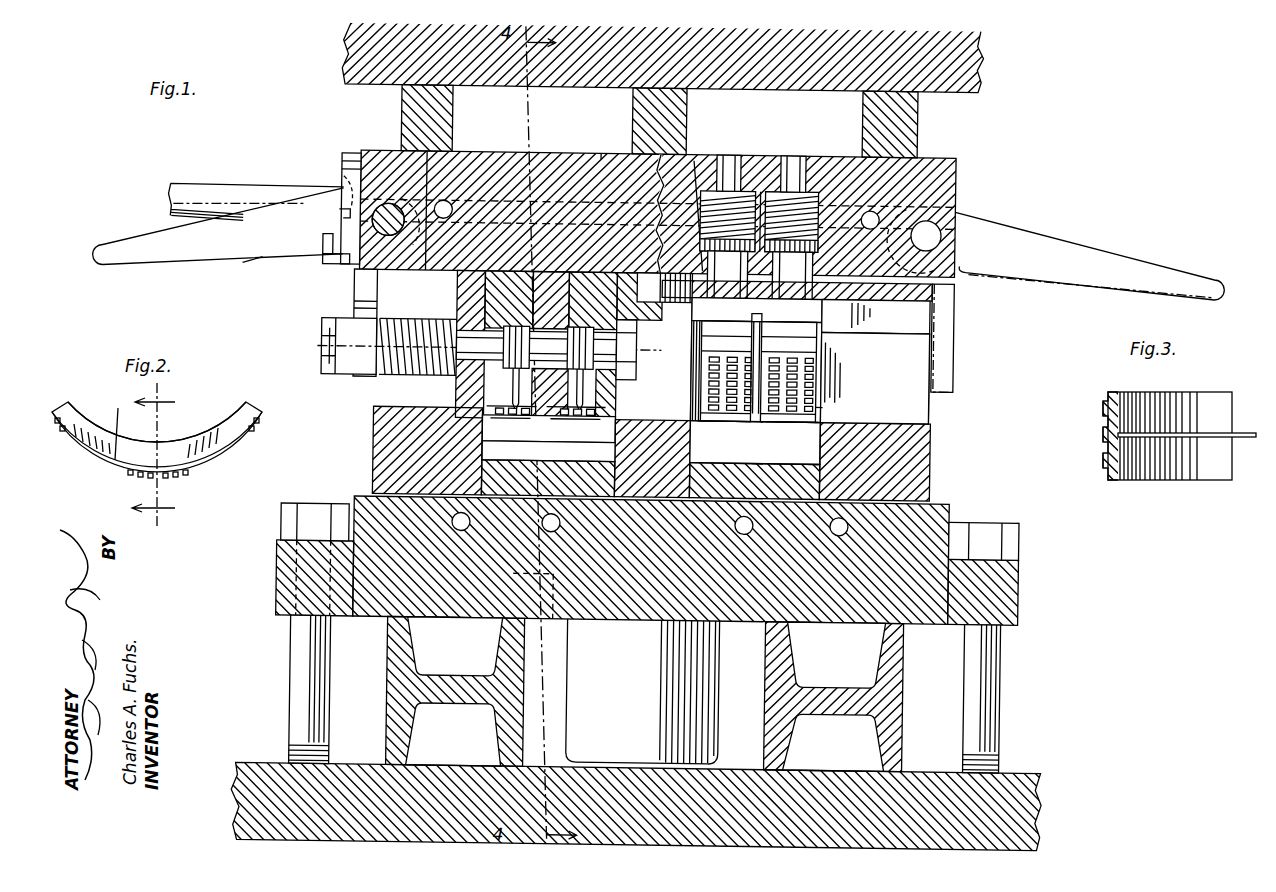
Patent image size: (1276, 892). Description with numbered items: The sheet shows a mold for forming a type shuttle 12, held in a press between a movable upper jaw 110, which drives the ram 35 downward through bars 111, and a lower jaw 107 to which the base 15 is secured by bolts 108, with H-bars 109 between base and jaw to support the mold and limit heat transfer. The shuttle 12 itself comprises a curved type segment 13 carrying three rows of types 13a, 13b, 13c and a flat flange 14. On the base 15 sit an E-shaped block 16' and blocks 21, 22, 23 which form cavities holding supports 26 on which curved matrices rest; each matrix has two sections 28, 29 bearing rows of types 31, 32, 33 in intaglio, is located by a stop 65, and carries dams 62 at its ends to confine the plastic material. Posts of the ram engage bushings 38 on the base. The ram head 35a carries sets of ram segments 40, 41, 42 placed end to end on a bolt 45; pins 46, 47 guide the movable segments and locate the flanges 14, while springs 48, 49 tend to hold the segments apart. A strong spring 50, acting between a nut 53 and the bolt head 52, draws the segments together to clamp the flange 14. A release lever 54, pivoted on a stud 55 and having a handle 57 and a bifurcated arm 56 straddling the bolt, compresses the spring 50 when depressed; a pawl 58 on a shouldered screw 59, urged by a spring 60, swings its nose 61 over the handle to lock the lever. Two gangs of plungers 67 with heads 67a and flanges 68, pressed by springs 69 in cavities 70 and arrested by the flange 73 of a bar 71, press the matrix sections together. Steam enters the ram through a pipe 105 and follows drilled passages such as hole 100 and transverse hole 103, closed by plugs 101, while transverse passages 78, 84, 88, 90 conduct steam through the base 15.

In FIG. 1, the upper jaw 110 is at (974, 88).
In FIG. 1, the bars 111 is at (404, 110).
In FIG. 1, the ram 35 is at (330, 134).
In FIG. 1, the ram head 35a is at (696, 160).
In FIG. 1, the hole 100 is at (597, 165).
In FIG. 1, the stud 55 is at (384, 207).
In FIG. 1, the transverse hole 103 is at (442, 208).
In FIG. 1, the plugs 101 is at (864, 212).
In FIG. 1, the plungers 67 is at (727, 160).
In FIG. 1, the spring 69 is at (770, 190).
In FIG. 1, the pawl 58 is at (346, 178).
In FIG. 1, the nose 61 is at (340, 183).
In FIG. 1, the spring 60 is at (336, 218).
In FIG. 1, the shouldered screw 59 is at (322, 247).
In FIG. 1, the pipe 105 is at (218, 200).
In FIG. 1, the handle 57 is at (140, 250).
In FIG. 1, the lever 54 is at (242, 274).
In FIG. 1, the arm 56 is at (358, 286).
In FIG. 1, the bolt 45 is at (320, 350).
In FIG. 1, the nut 53 is at (332, 368).
In FIG. 1, the spring 50 is at (418, 352).
In FIG. 1, the ram segment 40 is at (490, 278).
In FIG. 1, the intermediate segment 41 is at (545, 278).
In FIG. 1, the end segment 42 is at (598, 278).
In FIG. 1, the spring 48 is at (500, 344).
In FIG. 1, the pins 46 is at (505, 366).
In FIG. 1, the pins 47 is at (612, 346).
In FIG. 1, the spring 49 is at (625, 330).
In FIG. 1, the head 52 is at (632, 312).
In FIG. 1, the block 22 is at (640, 426).
In FIG. 1, the type segment 13 is at (542, 410).
In FIG. 2, the type segment 13 is at (117, 429).
In FIG. 3, the type segment 13 is at (1110, 394).
In FIG. 1, the flange 14 is at (515, 410).
In FIG. 2, the flange 14 is at (72, 415).
In FIG. 3, the flange 14 is at (1165, 436).
In FIG. 1, the stop 65 is at (650, 442).
In FIG. 1, the supports 26 is at (510, 470).
In FIG. 1, the block 21 is at (392, 474).
In FIG. 1, the matrix section 29 is at (694, 440).
In FIG. 1, the block 23 is at (922, 440).
In FIG. 1, the E-shaped block 16' is at (957, 349).
In FIG. 1, the dams 62 is at (706, 338).
In FIG. 1, the cavity 70 is at (765, 322).
In FIG. 1, the flange 68 is at (782, 322).
In FIG. 1, the head 67a is at (822, 306).
In FIG. 1, the flange 73 is at (912, 298).
In FIG. 1, the bar 71 is at (908, 332).
In FIG. 1, the matrix section 28 is at (818, 406).
In FIG. 1, the row of types 31 is at (770, 408).
In FIG. 1, the row of types 32 is at (788, 408).
In FIG. 1, the row of types 33 is at (800, 408).
In FIG. 1, the base 15 is at (290, 578).
In FIG. 1, the transverse passage 88 is at (462, 532).
In FIG. 1, the transverse passage 90 is at (555, 532).
In FIG. 1, the transverse passage 84 is at (745, 532).
In FIG. 1, the passage 78 is at (840, 532).
In FIG. 1, the H-bars 109 is at (392, 742).
In FIG. 1, the bolts 108 is at (308, 672).
In FIG. 1, the bushings 38 is at (715, 700).
In FIG. 1, the lower jaw 107 is at (1010, 786).
In FIG. 2, the type shuttle 12 is at (211, 487).
In FIG. 3, the type shuttle 12 is at (1141, 491).
In FIG. 2, the row of types 13a is at (135, 476).
In FIG. 3, the row of types 13a is at (1103, 408).
In FIG. 3, the row of types 13b is at (1103, 434).
In FIG. 3, the row of types 13c is at (1103, 460).